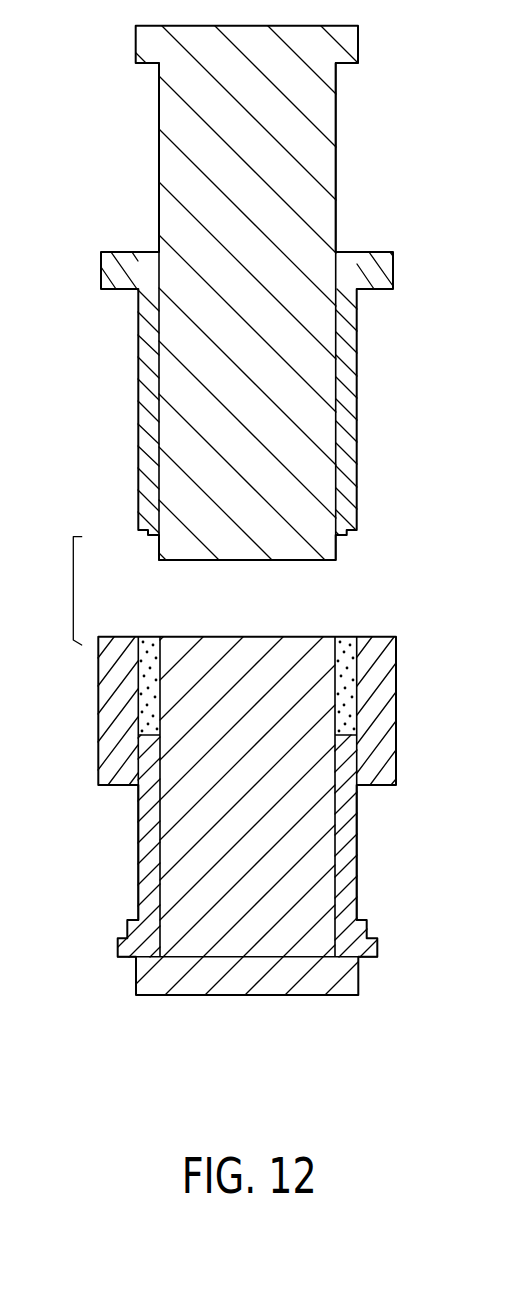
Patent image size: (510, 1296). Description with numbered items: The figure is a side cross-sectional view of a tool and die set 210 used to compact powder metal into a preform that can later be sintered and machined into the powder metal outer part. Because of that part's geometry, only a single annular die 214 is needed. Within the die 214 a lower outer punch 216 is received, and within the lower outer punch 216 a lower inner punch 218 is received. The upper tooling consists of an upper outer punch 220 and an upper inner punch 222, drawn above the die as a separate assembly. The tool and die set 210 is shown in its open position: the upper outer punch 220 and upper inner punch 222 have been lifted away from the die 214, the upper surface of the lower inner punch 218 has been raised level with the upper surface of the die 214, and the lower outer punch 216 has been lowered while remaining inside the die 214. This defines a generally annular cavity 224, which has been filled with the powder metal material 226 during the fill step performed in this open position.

The tool and die set 210 is at (73, 165).
The annular die 214 is at (107, 712).
The lower outer punch 216 is at (147, 813).
The lower inner punch 218 is at (180, 873).
The upper outer punch 220 is at (147, 352).
The upper inner punch 222 is at (175, 427).
The cavity 224 is at (343, 654).
The powder metal material 226 is at (155, 692).